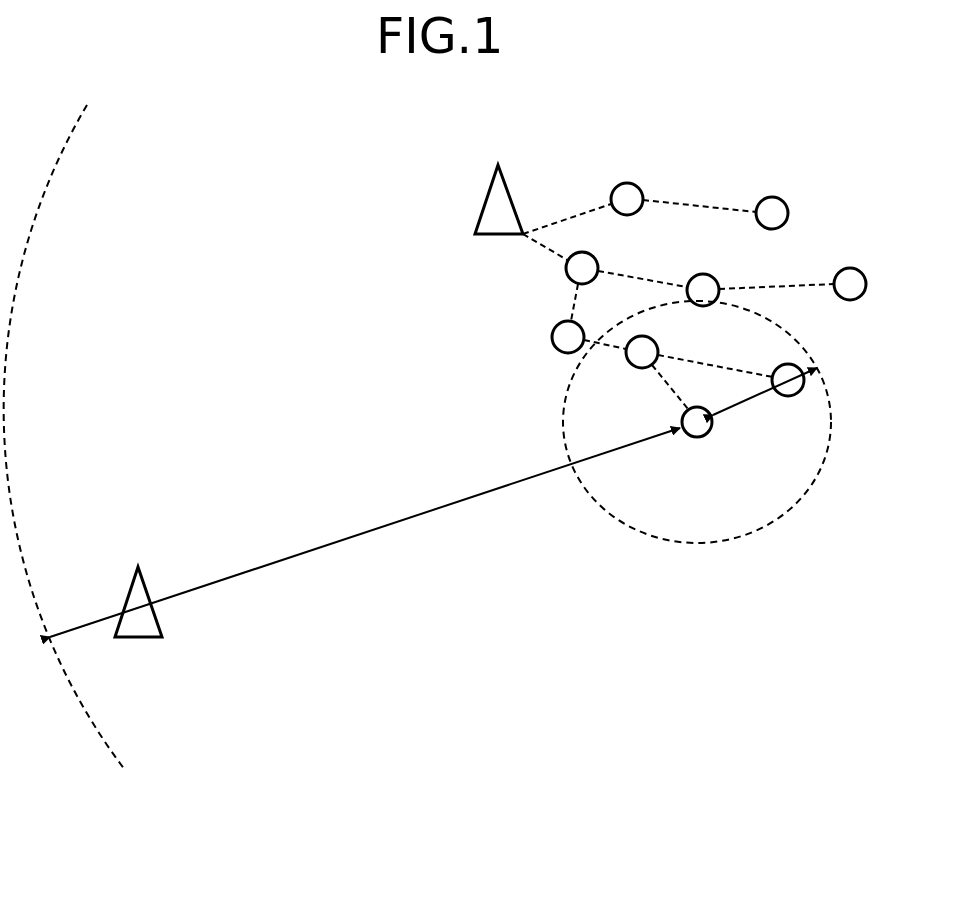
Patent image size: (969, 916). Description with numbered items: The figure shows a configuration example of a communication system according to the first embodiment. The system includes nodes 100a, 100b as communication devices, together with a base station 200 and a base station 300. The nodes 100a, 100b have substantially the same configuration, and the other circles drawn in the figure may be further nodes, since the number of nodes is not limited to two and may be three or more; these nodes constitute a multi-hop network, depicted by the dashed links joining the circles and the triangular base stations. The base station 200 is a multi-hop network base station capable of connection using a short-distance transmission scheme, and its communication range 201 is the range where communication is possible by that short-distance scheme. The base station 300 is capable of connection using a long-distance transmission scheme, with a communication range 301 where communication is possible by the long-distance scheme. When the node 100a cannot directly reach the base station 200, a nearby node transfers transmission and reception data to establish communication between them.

The node 100a is at (697, 438).
The node 100b is at (772, 197).
The base station 200 is at (487, 197).
The communication range 201 is at (748, 400).
The base station 300 is at (163, 618).
The communication range 301 is at (432, 510).